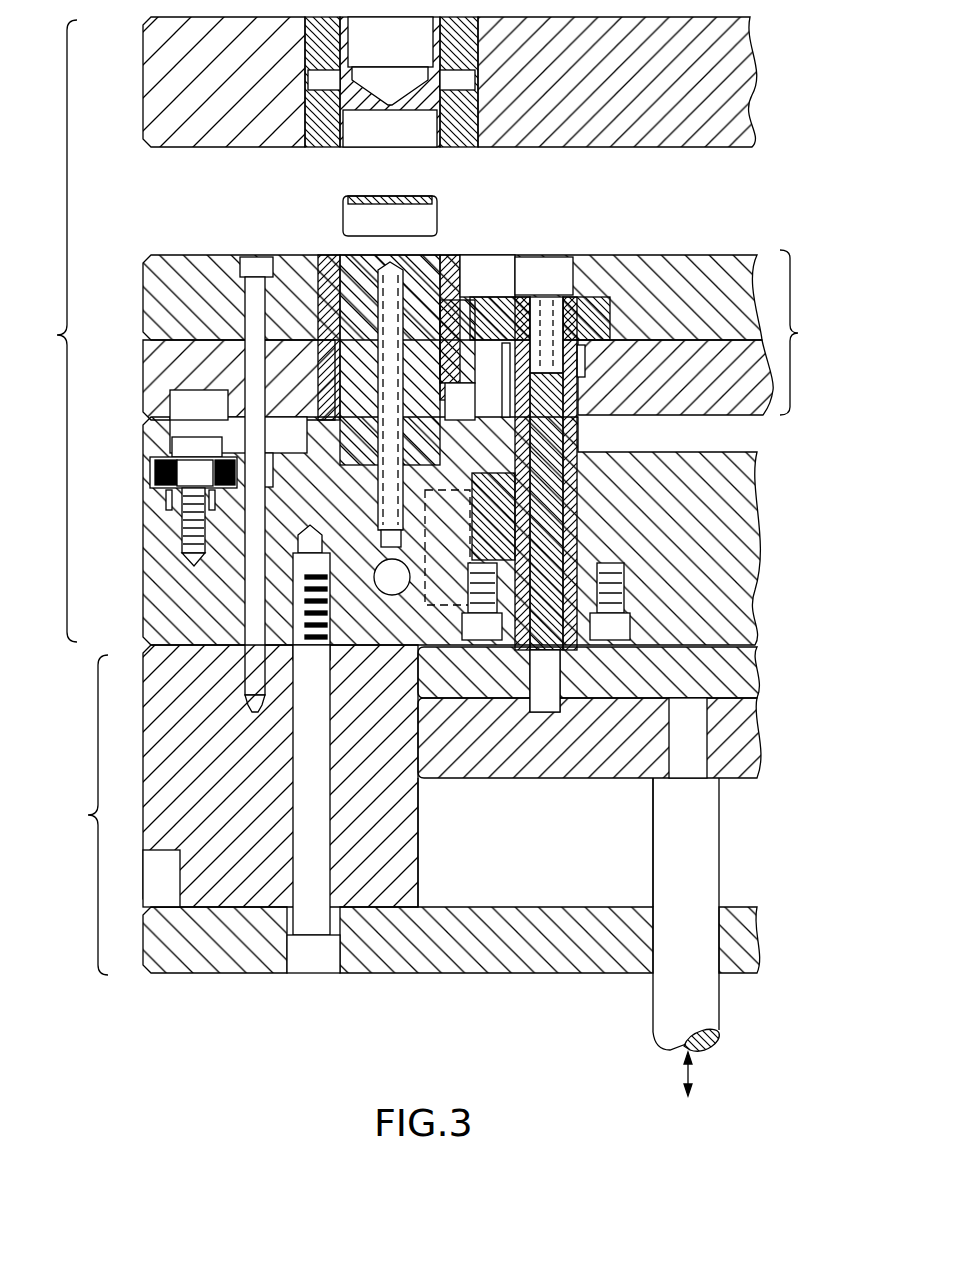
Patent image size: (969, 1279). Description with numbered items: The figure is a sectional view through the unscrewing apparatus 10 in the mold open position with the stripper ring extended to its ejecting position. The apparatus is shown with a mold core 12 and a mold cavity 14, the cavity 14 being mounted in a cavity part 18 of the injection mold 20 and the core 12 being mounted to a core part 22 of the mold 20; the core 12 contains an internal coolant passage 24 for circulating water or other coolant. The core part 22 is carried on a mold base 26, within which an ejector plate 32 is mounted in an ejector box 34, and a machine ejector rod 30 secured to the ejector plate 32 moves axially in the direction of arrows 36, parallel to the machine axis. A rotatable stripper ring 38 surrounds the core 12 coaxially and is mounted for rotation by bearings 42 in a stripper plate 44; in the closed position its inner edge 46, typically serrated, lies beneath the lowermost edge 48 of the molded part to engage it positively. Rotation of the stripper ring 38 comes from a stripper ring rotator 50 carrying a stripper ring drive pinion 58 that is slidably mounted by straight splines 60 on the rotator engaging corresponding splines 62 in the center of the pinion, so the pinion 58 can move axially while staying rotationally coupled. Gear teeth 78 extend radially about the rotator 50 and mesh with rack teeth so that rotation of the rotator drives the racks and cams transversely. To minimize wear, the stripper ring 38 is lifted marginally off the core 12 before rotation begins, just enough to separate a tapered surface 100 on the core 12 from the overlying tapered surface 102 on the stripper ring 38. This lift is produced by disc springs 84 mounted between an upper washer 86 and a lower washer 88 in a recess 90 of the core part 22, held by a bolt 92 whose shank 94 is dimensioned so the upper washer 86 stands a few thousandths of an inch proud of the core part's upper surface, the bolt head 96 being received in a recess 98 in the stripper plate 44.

The unscrewing apparatus 10 is at (612, 209).
The mold core 12 is at (363, 256).
The mold cavity 14 is at (325, 141).
The cavity part 18 is at (745, 62).
The injection mold 20 is at (47, 331).
The core part 22 is at (262, 458).
The internal coolant passage 24 is at (310, 470).
The mold base 26 is at (403, 810).
The machine ejector rod 30 is at (705, 852).
The ejector plate 32 is at (765, 748).
The ejector box 34 is at (556, 845).
The arrows 36 is at (692, 1075).
The stripper ring 38 is at (460, 292).
The bearings 42 is at (527, 440).
The stripper plate 44 is at (492, 335).
The inner edge 46 is at (455, 275).
The lowermost edge 48 is at (440, 257).
The stripper ring rotator 50 is at (578, 433).
The stripper ring drive pinion 58 is at (620, 298).
The straight splines 60 is at (632, 378).
The splines 62 is at (600, 300).
The gear teeth 78 is at (577, 515).
The disc springs 84 is at (160, 480).
The upper washer 86 is at (158, 455).
The lower washer 88 is at (178, 492).
The recess 90 is at (170, 510).
The bolt 92 is at (213, 507).
The shank 94 is at (170, 447).
The head 96 is at (183, 467).
The recess 98 is at (187, 393).
The tapered surface 100 is at (240, 290).
The tapered surface 102 is at (337, 270).